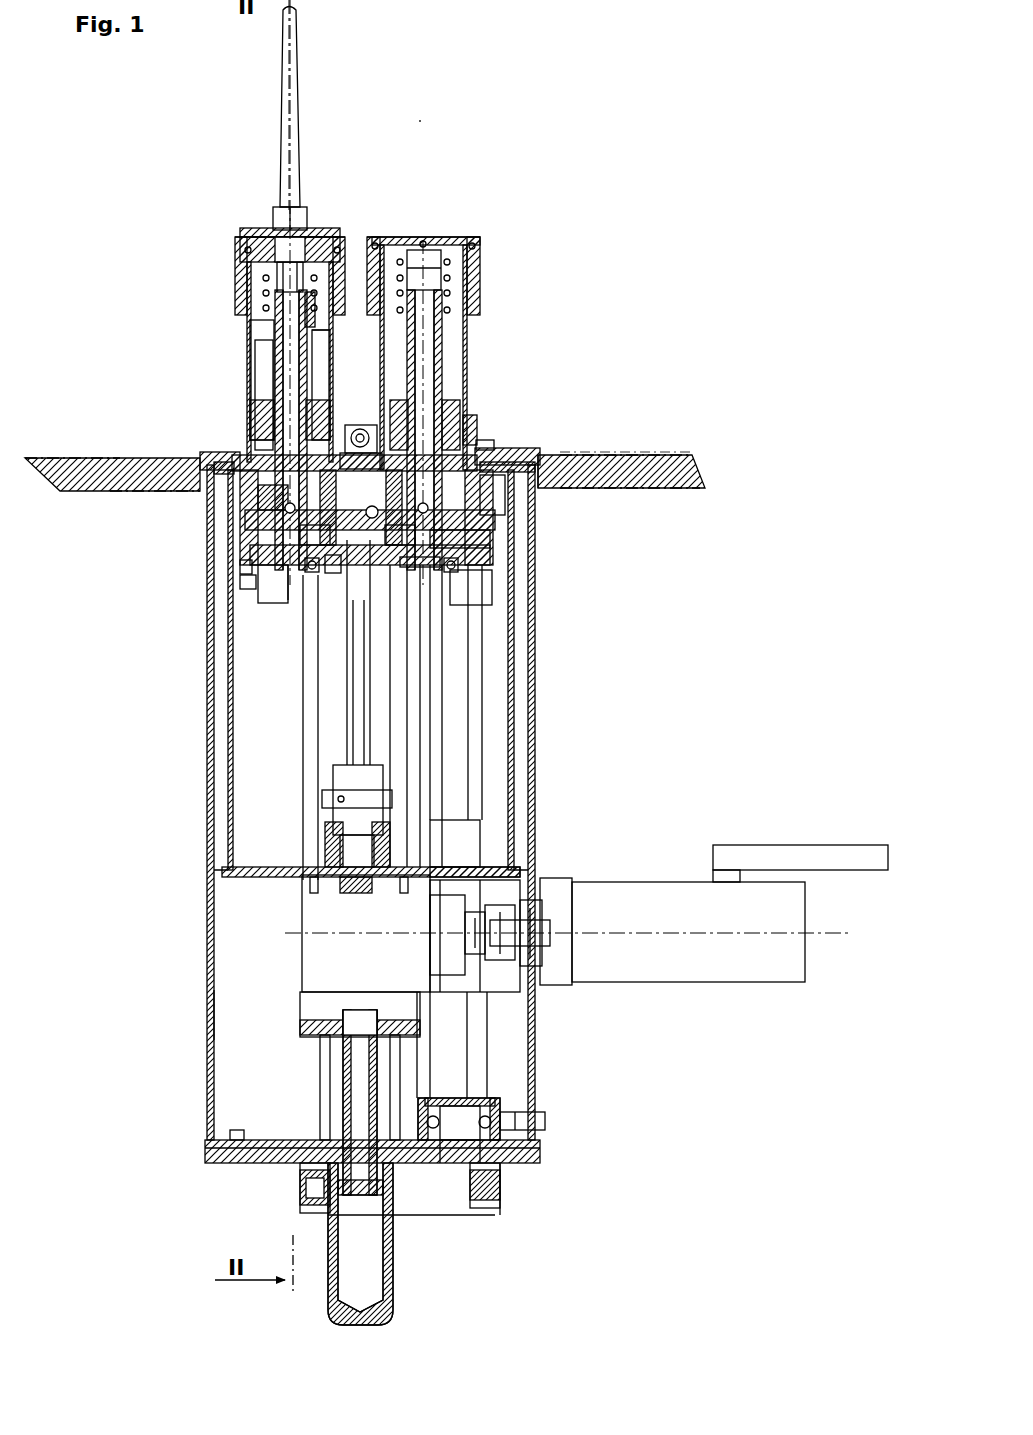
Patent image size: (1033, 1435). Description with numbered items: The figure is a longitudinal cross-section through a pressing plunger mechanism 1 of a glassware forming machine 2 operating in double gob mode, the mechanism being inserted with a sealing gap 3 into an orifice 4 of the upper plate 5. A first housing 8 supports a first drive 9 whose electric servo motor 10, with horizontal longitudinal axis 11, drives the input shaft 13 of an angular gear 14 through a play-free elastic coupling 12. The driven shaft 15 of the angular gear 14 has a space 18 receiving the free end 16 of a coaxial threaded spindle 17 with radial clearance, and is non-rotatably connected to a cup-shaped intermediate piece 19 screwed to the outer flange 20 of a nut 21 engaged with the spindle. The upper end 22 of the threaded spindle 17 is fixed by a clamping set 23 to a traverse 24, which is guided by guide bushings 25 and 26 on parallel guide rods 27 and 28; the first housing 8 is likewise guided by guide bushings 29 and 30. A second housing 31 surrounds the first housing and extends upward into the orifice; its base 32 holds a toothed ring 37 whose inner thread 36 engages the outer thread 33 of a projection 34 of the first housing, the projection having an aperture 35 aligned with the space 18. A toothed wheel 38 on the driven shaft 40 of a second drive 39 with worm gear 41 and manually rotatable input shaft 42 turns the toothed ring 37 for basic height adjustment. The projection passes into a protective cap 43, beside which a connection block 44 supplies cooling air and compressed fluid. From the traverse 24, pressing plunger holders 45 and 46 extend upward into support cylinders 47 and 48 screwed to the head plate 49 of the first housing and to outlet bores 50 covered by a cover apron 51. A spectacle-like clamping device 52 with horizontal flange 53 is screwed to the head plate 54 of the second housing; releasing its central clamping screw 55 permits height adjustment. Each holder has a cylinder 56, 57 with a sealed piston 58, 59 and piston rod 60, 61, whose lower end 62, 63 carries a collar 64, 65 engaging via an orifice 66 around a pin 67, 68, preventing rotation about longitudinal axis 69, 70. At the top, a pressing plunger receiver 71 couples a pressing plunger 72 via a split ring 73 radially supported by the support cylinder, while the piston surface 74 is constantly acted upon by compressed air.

The pressing plunger mechanism 1 is at (503, 153).
The glassware forming machine 2 is at (653, 410).
The sealing gap 3 is at (556, 454).
The orifice 4 is at (550, 486).
The upper plate 5 is at (660, 478).
The first housing 8 is at (540, 748).
The first drive 9 is at (656, 878).
The electric servo motor 10 is at (714, 965).
The horizontal longitudinal axis 11 is at (838, 937).
The play-free elastic coupling 12 is at (545, 968).
The input shaft 13 is at (470, 995).
The angular gear 14 is at (325, 948).
The driven shaft 15 is at (440, 824).
The free end 16 is at (370, 882).
The threaded spindle 17 is at (355, 728).
The space 18 is at (352, 880).
The cup-shaped intermediate piece 19 is at (330, 838).
The outer flange 20 is at (330, 800).
The nut 21 is at (322, 768).
The upper end 22 is at (385, 605).
The clamping set 23 is at (322, 662).
The traverse 24 is at (270, 552).
The guide bushing 25 is at (305, 632).
The guide bushing 26 is at (470, 592).
The guide rod 27 is at (322, 652).
The guide rod 28 is at (455, 787).
The guide bushing 29 is at (315, 850).
The guide bushing 30 is at (470, 847).
The second housing 31 is at (200, 1008).
The base 32 is at (195, 1160).
The outer thread 33 is at (335, 1020).
The projection 34 is at (372, 1198).
The aperture 35 is at (450, 1080).
The inner thread 36 is at (345, 1068).
The toothed ring 37 is at (310, 1140).
The toothed wheel 38 is at (500, 1180).
The second drive 39 is at (512, 1104).
The driven shaft 40 is at (457, 1150).
The worm gear 41 is at (492, 1098).
The input shaft 42 is at (548, 1120).
The protective cap 43 is at (395, 1300).
The connection block 44 is at (500, 1165).
The pressing plunger holder 45 is at (245, 492).
The pressing plunger holder 46 is at (495, 530).
The support cylinder 47 is at (243, 338).
The support cylinder 48 is at (448, 332).
The head plate 49 is at (490, 480).
The outlet bores 50 is at (264, 306).
The cover apron 51 is at (245, 250).
The clamping device 52 is at (480, 415).
The horizontal flange 53 is at (236, 455).
The head plate 54 is at (210, 465).
The central clamping screw 55 is at (359, 428).
The cylinder 56 is at (255, 432).
The cylinder 57 is at (488, 444).
The piston 58 is at (300, 420).
The piston 59 is at (392, 440).
The piston rod 60 is at (268, 342).
The piston rod 61 is at (470, 300).
The lower end 62 is at (330, 578).
The lower end 63 is at (425, 605).
The collar 64 is at (243, 574).
The collar 65 is at (462, 567).
The orifice 66 is at (250, 585).
The pin 67 is at (268, 592).
The pin 68 is at (400, 600).
The longitudinal axis 69 is at (300, 124).
The longitudinal axis 70 is at (458, 360).
The pressing plunger receiver 71 is at (275, 272).
The pressing plunger 72 is at (292, 97).
The split ring 73 is at (255, 228).
The piston surface 74 is at (256, 500).